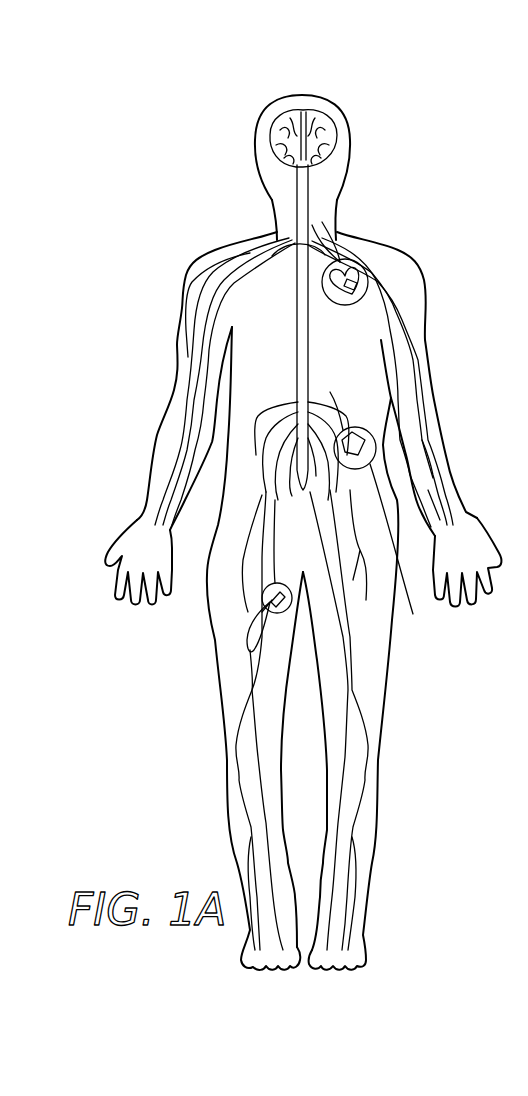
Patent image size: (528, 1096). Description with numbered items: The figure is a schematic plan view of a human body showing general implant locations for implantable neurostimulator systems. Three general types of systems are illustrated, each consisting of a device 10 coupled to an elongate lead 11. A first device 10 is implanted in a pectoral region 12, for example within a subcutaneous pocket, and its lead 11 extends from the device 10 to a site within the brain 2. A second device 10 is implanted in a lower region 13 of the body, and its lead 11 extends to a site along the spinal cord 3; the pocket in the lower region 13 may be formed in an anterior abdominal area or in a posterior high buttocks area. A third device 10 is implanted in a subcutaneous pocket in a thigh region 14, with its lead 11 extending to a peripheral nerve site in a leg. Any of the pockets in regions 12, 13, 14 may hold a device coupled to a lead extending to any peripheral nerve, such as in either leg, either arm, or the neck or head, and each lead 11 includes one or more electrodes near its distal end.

The brain 2 is at (340, 114).
The spinal cord 3 is at (294, 344).
The device 10 is at (352, 284).
The elongate lead 11 is at (330, 223).
The pectoral region 12 is at (366, 266).
The lower region 13 is at (401, 553).
The thigh region 14 is at (280, 614).